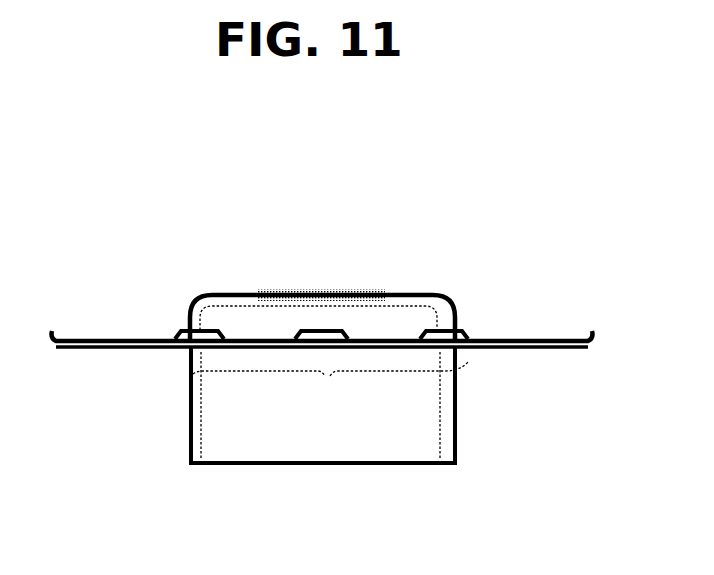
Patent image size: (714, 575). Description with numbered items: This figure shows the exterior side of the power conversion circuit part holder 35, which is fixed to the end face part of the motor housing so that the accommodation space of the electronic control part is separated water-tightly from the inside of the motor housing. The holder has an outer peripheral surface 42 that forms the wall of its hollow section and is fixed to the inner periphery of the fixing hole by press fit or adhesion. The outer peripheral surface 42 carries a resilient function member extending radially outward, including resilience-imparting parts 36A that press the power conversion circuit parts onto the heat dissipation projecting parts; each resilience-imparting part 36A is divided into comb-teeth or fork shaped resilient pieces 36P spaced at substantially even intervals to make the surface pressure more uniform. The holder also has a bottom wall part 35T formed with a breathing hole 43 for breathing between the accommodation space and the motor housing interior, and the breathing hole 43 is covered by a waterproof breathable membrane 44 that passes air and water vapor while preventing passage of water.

The power conversion circuit part holder 35 is at (313, 466).
The bottom wall part 35T is at (205, 292).
The resilience-imparting part 36A is at (330, 378).
The resilient piece 36P is at (110, 350).
The outer peripheral surface 42 is at (178, 358).
The breathing hole 43 is at (405, 293).
The waterproof breathable membrane 44 is at (332, 293).